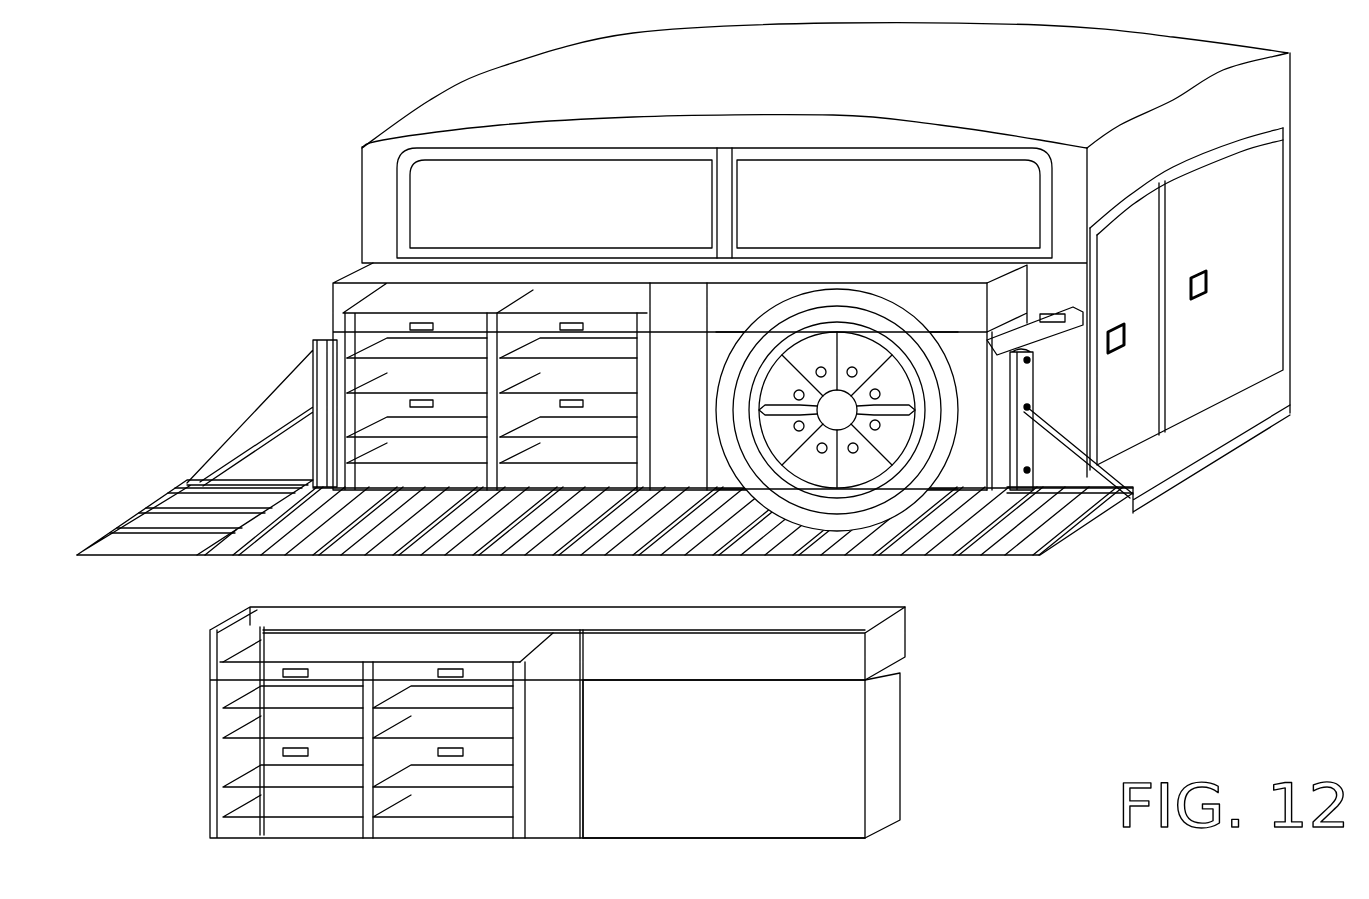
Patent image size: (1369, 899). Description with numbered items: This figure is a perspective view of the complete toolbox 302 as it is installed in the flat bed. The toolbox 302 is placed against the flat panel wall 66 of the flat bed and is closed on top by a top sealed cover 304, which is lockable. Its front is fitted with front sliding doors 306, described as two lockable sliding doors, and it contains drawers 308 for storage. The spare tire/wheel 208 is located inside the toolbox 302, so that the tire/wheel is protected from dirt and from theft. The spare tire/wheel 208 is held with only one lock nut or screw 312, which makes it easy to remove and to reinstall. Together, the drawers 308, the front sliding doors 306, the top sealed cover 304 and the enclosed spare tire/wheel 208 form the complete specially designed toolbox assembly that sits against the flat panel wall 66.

The flat panel wall 66 is at (353, 279).
The spare tire/wheel 208 is at (940, 413).
The lock nut or screw 312 is at (837, 410).
The toolbox 302 is at (572, 722).
The top sealed cover 304 is at (882, 657).
The front sliding doors 306 is at (817, 773).
The drawers 308 is at (277, 730).